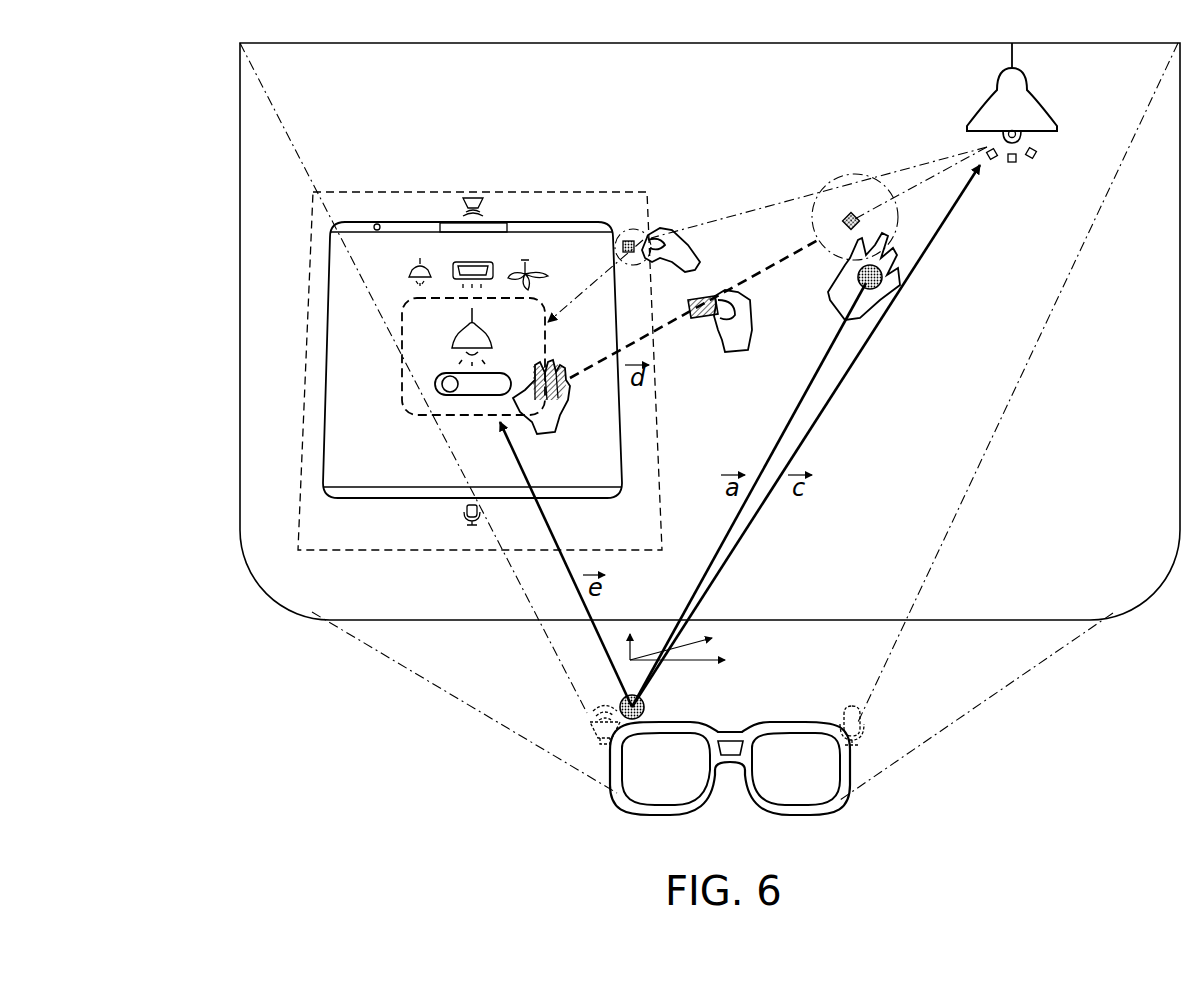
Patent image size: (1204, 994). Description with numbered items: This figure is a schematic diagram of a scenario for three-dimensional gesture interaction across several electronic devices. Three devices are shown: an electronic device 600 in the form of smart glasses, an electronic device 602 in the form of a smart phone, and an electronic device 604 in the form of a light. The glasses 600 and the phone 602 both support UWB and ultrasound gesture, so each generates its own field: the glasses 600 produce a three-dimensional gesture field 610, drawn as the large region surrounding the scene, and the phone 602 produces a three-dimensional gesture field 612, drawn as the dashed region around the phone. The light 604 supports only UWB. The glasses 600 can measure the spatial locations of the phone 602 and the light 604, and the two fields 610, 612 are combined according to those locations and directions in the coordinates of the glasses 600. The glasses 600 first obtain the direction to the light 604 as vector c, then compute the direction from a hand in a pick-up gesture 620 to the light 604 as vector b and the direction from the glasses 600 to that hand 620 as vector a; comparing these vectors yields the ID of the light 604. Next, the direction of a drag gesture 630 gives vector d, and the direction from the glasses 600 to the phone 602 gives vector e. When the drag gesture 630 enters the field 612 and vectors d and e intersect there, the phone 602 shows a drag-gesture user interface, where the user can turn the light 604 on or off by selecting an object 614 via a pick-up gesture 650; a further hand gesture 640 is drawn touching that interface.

The electronic device 600 is at (662, 812).
The electronic device 602 is at (552, 221).
The electronic device 604 is at (970, 108).
The 3D gesture field 610 is at (239, 447).
The 3D gesture field 612 is at (310, 272).
The object 614 is at (400, 394).
The pick-up gesture 620 is at (884, 304).
The drag gesture 630 is at (740, 355).
The touch gesture on control interface 640 is at (555, 445).
The pick-up gesture 650 is at (660, 228).